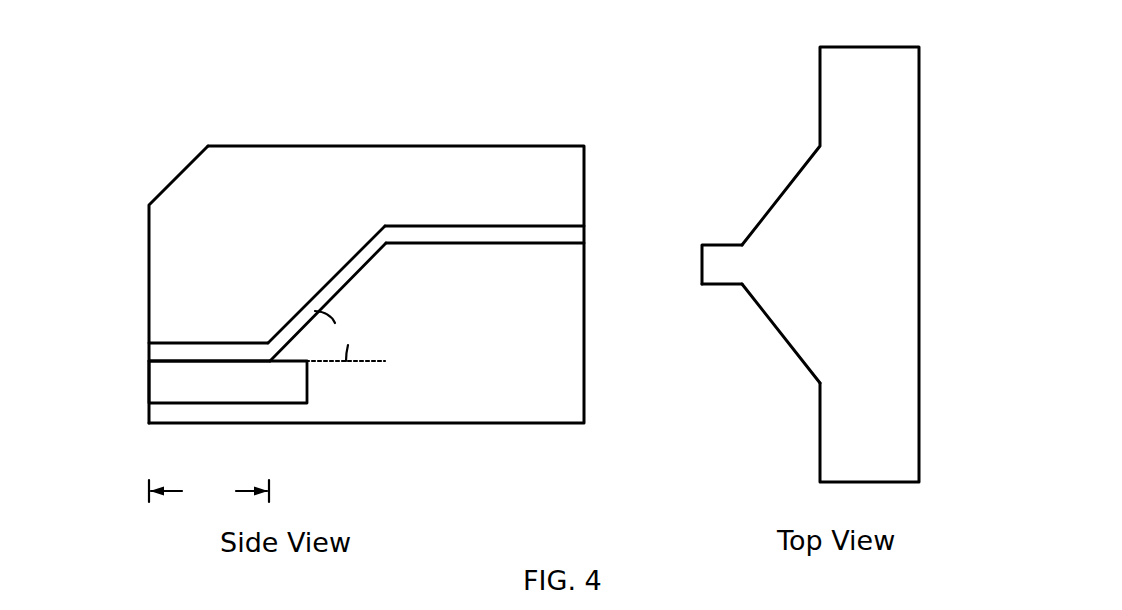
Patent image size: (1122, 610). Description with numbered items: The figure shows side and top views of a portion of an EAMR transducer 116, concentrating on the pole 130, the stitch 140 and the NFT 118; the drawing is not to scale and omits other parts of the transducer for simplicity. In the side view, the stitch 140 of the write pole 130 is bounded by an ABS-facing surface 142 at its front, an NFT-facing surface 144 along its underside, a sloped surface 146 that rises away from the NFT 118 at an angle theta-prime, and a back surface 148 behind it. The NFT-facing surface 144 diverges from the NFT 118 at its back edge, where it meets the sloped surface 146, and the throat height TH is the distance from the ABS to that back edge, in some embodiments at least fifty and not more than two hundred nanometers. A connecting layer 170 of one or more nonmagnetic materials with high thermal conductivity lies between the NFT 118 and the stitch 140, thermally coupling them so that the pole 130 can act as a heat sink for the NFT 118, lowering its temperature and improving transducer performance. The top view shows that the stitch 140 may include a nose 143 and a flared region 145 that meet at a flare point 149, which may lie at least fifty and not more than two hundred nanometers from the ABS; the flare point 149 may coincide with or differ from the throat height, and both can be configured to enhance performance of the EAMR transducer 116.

The EAMR transducer 116 is at (592, 41).
The pole 130 is at (146, 121).
The stitch 140 is at (584, 200).
The ABS-facing surface 142 is at (126, 227).
The NFT-facing surface 144 is at (206, 320).
The sloped surface 146 is at (283, 303).
The back surface 148 is at (465, 203).
The connecting layer 170 is at (149, 345).
The NFT 118 is at (149, 383).
The nose 143 is at (680, 272).
The flare point 149 is at (736, 297).
The flared region 145 is at (769, 337).